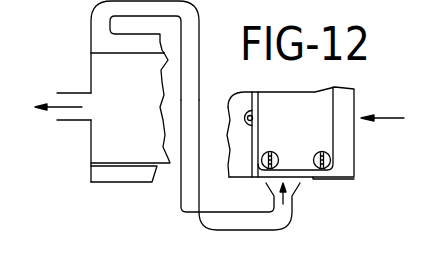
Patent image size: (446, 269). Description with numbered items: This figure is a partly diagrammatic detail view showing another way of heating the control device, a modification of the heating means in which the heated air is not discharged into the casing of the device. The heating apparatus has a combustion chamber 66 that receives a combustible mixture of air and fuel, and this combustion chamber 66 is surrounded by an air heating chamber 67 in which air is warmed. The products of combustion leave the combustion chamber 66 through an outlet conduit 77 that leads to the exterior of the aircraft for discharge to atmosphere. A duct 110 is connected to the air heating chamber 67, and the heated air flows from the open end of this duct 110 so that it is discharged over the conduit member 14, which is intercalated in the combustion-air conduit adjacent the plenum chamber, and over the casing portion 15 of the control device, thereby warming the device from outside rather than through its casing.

The conduit member 14 is at (348, 172).
The casing portion 15 is at (331, 113).
The combustion chamber 66 is at (132, 126).
The air heating chamber 67 is at (124, 43).
The outlet conduit 77 is at (70, 120).
The duct 110 is at (293, 203).